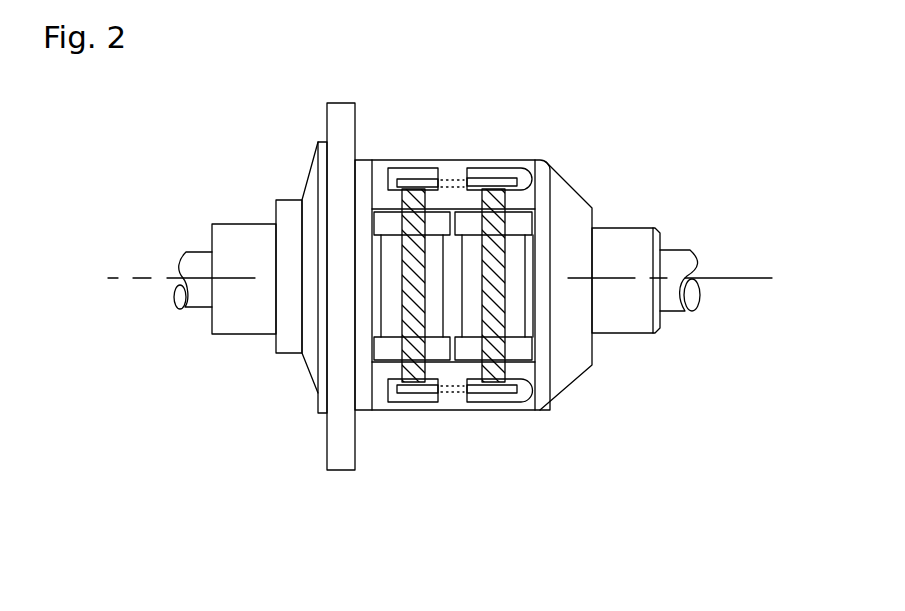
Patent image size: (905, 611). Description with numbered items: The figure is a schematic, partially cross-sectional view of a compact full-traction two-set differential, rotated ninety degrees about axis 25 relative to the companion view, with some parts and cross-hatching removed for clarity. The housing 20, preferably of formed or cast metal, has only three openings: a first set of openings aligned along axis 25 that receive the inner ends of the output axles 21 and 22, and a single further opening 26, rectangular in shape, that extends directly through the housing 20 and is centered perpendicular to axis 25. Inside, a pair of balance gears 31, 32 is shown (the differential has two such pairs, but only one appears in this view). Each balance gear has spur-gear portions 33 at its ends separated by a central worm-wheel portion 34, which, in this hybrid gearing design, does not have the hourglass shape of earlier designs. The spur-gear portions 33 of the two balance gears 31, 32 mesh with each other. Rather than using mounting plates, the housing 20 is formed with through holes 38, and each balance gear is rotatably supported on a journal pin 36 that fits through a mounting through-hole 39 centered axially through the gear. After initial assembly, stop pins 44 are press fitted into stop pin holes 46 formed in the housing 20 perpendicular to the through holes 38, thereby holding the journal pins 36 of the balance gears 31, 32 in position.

The housing 20 is at (340, 130).
The output axle 21 is at (197, 262).
The output axle 22 is at (682, 262).
The axis 25 is at (754, 277).
The further opening 26 is at (530, 270).
The balance gear 31 is at (392, 362).
The balance gear 32 is at (522, 347).
The spur-gear portions 33 is at (390, 242).
The worm-wheel portion 34 is at (377, 285).
The journal pin 36 is at (497, 205).
The through holes 38 is at (493, 368).
The mounting through-hole 39 is at (495, 302).
The stop pin 44 is at (417, 177).
The stop pin hole 46 is at (455, 175).